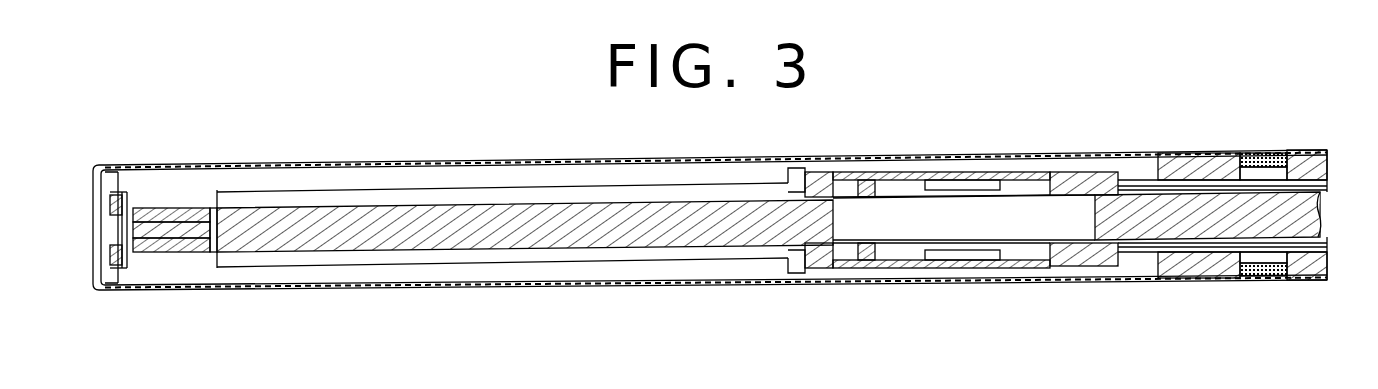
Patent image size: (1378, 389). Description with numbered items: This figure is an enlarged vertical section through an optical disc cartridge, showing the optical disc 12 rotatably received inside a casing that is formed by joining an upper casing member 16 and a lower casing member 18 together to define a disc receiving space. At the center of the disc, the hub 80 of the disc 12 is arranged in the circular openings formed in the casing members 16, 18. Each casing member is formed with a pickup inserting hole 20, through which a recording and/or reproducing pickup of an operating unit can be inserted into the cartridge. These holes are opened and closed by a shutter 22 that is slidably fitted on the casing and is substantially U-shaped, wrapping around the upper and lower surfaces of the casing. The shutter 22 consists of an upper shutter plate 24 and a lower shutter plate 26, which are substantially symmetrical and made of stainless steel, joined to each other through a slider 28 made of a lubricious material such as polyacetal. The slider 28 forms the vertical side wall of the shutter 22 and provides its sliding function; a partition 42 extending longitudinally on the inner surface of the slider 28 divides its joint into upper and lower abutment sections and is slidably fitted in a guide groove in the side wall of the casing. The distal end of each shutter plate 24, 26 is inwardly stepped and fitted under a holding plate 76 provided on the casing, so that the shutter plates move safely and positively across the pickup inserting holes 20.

The optical disc 12 is at (532, 235).
The upper casing member 16 is at (1302, 282).
The lower casing member 18 is at (1311, 150).
The pickup inserting hole 20 is at (492, 180).
The shutter 22 is at (133, 111).
The upper shutter plate 24 is at (309, 290).
The lower shutter plate 26 is at (302, 164).
The slider 28 is at (108, 238).
The partition 42 is at (173, 253).
The holding plate 76 is at (1251, 158).
The hub 80 is at (1113, 166).